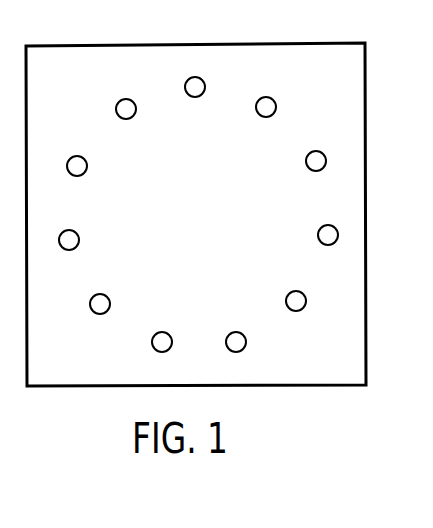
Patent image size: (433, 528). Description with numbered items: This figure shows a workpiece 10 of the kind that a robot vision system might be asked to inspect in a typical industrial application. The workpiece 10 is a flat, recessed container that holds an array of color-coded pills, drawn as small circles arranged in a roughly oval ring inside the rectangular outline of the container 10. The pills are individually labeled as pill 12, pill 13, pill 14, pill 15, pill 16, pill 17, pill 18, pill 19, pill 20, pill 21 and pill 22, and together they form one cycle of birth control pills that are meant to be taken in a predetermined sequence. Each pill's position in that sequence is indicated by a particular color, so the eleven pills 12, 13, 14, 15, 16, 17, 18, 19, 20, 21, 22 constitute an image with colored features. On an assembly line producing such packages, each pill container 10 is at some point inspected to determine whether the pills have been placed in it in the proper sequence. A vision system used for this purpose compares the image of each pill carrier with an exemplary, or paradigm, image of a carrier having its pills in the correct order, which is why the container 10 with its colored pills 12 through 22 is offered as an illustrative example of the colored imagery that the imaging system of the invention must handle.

The workpiece 10 is at (250, 43).
The color-coded pill 12 is at (188, 78).
The color-coded pill 13 is at (118, 103).
The color-coded pill 14 is at (86, 161).
The color-coded pill 15 is at (78, 235).
The color-coded pill 16 is at (91, 311).
The color-coded pill 17 is at (153, 340).
The color-coded pill 18 is at (246, 338).
The color-coded pill 19 is at (305, 304).
The color-coded pill 20 is at (320, 230).
The color-coded pill 21 is at (310, 155).
The color-coded pill 22 is at (275, 100).